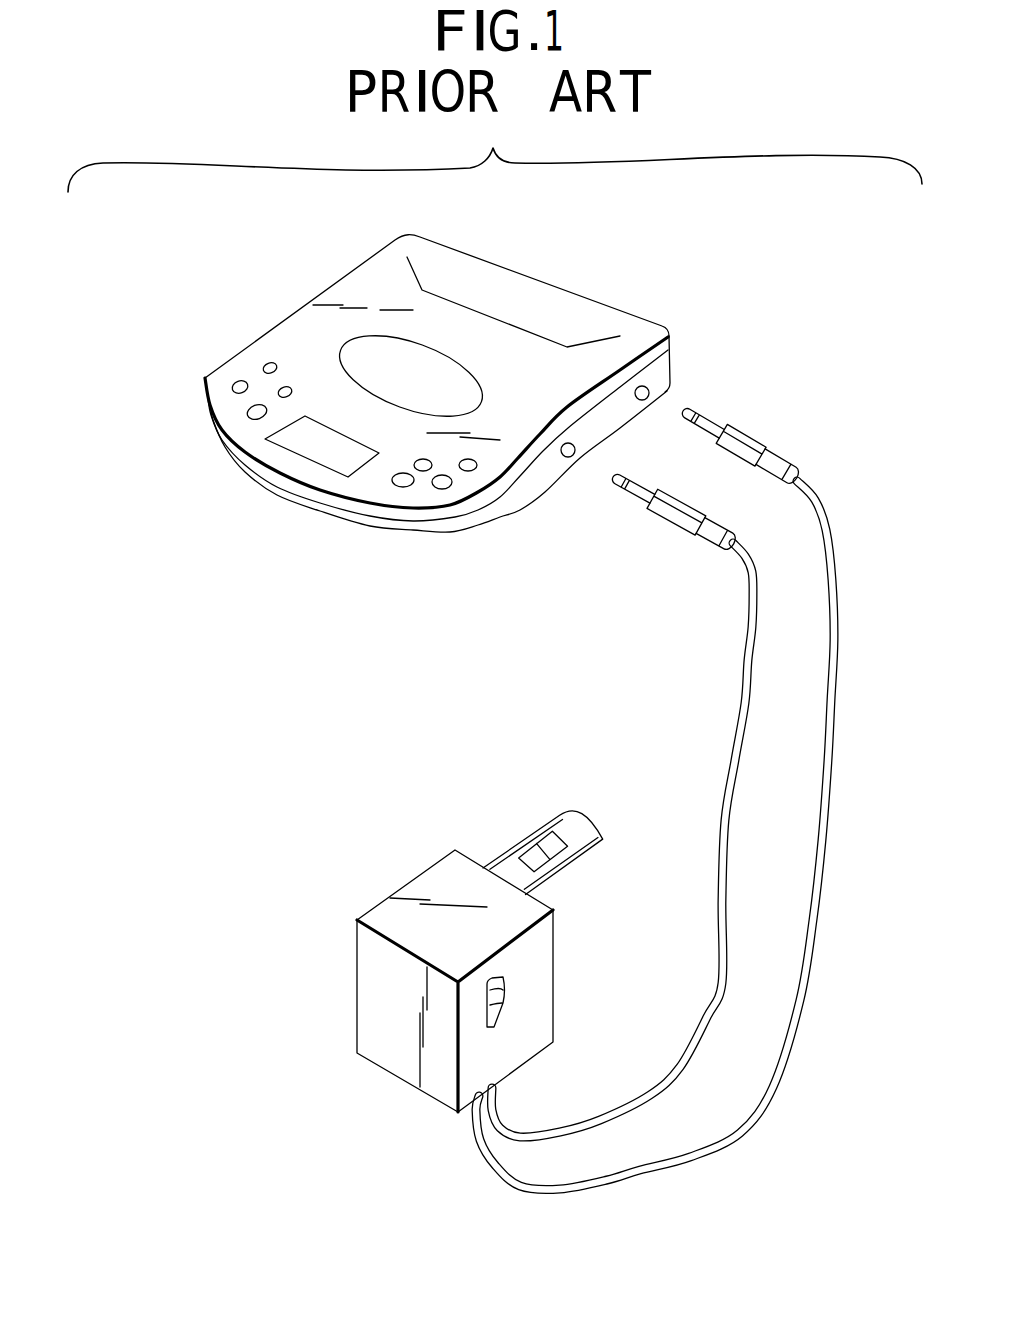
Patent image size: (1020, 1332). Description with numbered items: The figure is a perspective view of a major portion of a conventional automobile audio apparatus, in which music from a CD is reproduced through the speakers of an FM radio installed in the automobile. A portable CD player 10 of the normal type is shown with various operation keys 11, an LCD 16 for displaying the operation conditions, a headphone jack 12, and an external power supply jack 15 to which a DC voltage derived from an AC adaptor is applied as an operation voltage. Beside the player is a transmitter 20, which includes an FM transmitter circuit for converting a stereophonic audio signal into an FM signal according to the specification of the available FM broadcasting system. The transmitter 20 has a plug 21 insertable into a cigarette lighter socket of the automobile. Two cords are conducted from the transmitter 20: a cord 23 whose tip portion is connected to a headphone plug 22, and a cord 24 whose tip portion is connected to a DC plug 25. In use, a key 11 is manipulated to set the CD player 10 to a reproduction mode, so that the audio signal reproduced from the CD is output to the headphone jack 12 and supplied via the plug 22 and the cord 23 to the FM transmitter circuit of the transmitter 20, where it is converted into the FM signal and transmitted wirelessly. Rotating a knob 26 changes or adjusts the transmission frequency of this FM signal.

The portable CD player 10 is at (200, 284).
The operation keys 11 is at (241, 394).
The headphone jack 12 is at (572, 457).
The external power supply jack 15 is at (649, 390).
The LCD 16 is at (308, 452).
The transmitter 20 is at (383, 1000).
The plug 21 is at (573, 868).
The headphone plug 22 is at (640, 507).
The cord 23 is at (740, 703).
The cord 24 is at (836, 610).
The DC plug 25 is at (715, 410).
The knob 26 is at (507, 995).